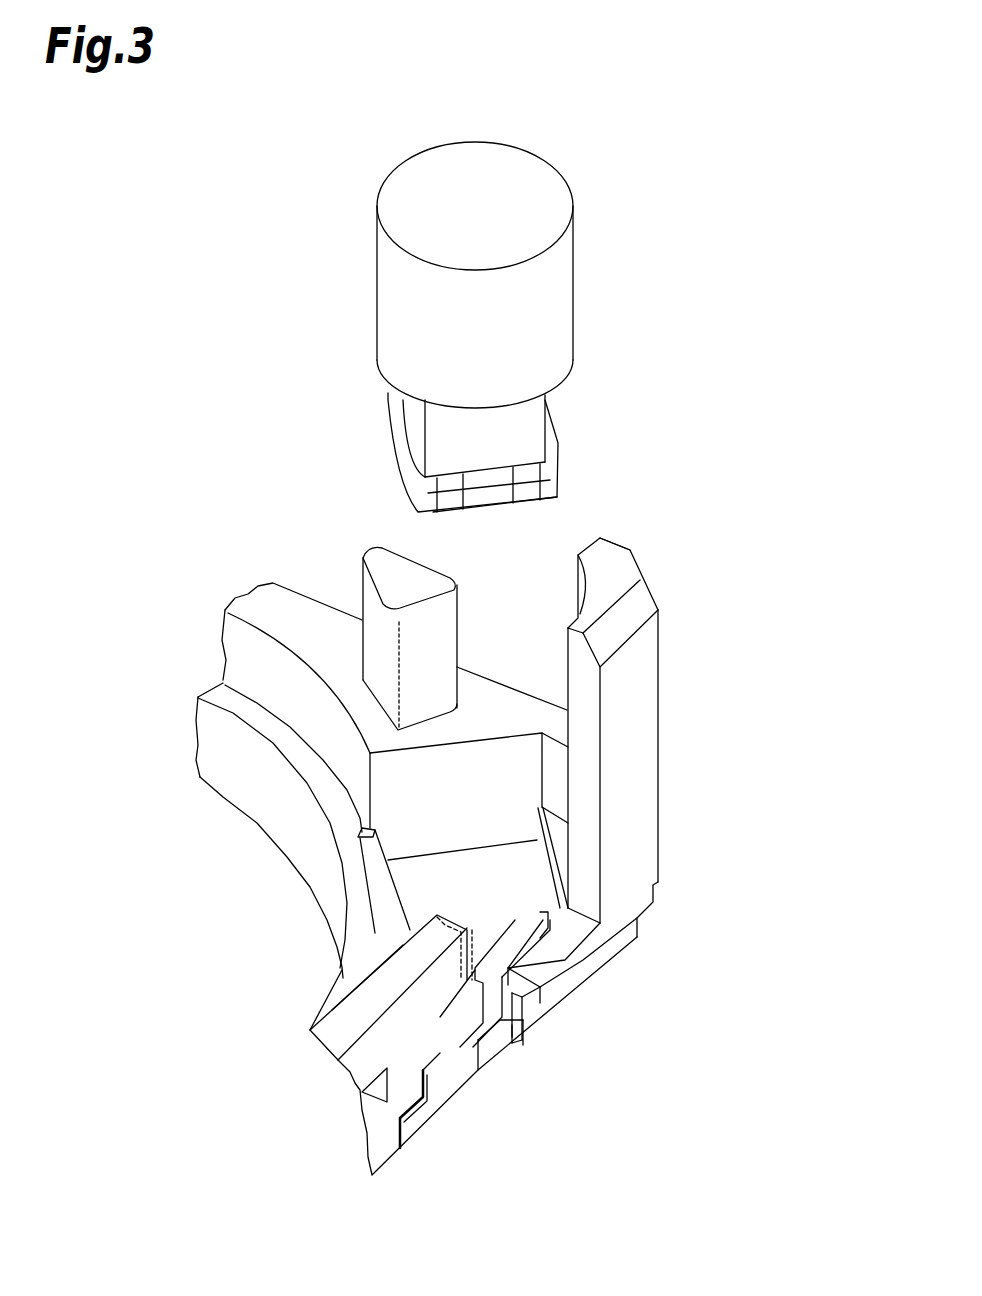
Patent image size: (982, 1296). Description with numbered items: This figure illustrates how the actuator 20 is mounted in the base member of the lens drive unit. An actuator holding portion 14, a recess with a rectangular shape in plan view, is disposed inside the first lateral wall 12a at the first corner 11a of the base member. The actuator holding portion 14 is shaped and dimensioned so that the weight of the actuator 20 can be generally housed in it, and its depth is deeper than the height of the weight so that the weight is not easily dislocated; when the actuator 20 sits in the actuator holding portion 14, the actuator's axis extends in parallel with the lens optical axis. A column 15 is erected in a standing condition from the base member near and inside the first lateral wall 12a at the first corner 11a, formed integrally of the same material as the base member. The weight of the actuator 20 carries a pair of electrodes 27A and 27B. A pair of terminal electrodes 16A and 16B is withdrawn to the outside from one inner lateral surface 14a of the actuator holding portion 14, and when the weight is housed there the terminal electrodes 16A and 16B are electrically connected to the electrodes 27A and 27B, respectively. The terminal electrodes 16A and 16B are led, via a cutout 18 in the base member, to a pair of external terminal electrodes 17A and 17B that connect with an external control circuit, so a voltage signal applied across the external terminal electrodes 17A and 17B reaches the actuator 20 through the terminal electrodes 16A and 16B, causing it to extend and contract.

The actuator 20 is at (592, 248).
The electrode 27A is at (452, 503).
The electrode 27B is at (530, 495).
The column 15 is at (378, 555).
The first lateral wall 12a is at (613, 560).
The first corner 11a is at (663, 847).
The actuator holding portion 14 is at (535, 852).
The inner lateral surface 14a is at (537, 847).
The terminal electrode 16A is at (460, 920).
The terminal electrode 16B is at (530, 908).
The external terminal electrode 17A is at (418, 1120).
The external terminal electrode 17B is at (497, 1043).
The cutout 18 is at (530, 997).